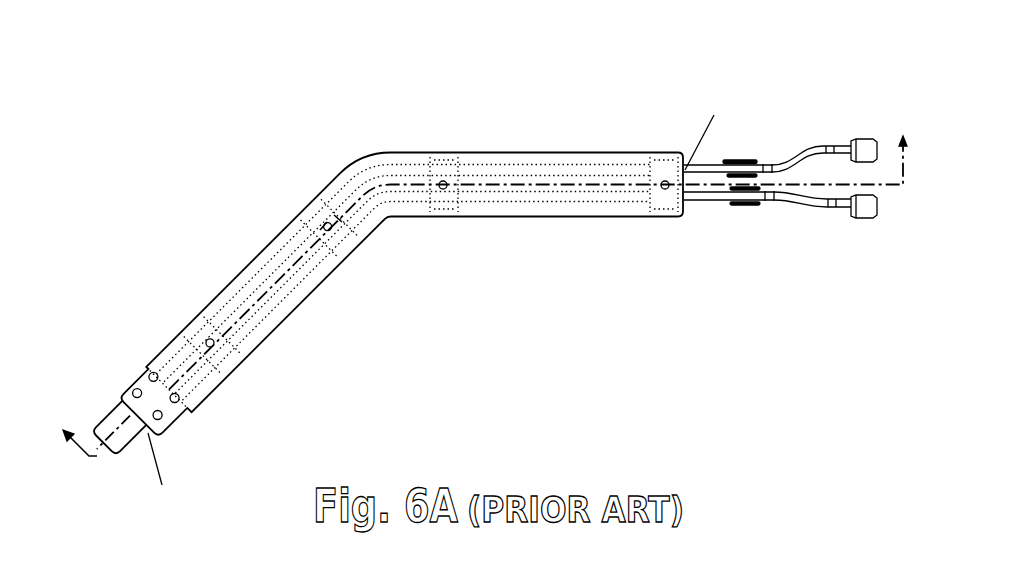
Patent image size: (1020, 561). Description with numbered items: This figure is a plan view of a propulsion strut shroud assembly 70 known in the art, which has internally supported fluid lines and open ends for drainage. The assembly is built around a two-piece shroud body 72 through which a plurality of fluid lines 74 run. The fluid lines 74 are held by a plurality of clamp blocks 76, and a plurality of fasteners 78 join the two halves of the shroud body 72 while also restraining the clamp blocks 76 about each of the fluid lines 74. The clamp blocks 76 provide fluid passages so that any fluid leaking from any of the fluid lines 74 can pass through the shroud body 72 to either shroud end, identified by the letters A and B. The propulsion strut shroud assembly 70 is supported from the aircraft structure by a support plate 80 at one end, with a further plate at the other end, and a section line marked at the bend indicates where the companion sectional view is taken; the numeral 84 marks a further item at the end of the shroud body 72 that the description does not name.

The propulsion strut shroud assembly 70 is at (491, 268).
The shroud body 72 is at (536, 155).
The fluid lines 74 is at (797, 198).
The clamp blocks 76 is at (441, 176).
The fasteners 78 is at (209, 339).
The support plate 80 is at (121, 445).
The pin 84 is at (664, 181).